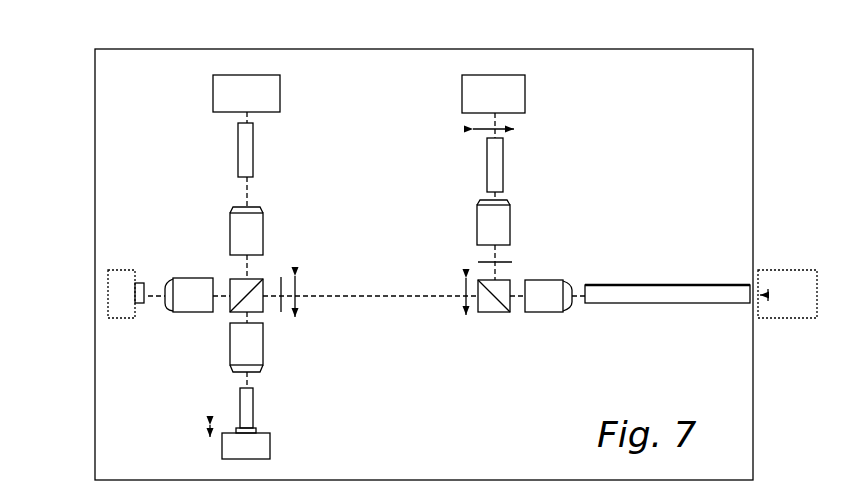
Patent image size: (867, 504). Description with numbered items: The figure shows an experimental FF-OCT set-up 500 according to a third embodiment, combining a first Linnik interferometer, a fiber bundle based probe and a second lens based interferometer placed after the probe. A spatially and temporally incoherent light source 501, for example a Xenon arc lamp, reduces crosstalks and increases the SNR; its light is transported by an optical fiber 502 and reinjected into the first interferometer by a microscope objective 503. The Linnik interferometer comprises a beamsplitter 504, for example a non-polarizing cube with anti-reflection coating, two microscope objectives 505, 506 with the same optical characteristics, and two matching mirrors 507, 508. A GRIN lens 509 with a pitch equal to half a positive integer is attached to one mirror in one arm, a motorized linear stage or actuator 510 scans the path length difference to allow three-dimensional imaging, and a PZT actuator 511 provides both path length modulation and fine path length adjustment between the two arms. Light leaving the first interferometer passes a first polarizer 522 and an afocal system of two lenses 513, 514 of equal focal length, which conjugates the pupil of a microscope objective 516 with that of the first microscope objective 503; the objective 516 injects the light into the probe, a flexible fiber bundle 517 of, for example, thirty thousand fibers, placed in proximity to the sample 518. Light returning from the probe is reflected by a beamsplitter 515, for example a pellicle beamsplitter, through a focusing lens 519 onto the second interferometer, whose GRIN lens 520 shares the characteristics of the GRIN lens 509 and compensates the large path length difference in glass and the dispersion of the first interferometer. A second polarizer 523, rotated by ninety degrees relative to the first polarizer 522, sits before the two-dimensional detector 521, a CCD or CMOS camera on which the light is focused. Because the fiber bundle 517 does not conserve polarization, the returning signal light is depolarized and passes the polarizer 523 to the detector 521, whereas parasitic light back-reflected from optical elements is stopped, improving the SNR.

The FF-OCT set-up 500 is at (155, 6).
The light source 501 is at (266, 112).
The optical fiber 502 is at (238, 133).
The microscope objective 503 is at (230, 222).
The beamsplitter 504 is at (230, 290).
The microscope objective 505 is at (230, 343).
The microscope objective 506 is at (166, 284).
The mirror 507 is at (257, 430).
The mirror 508 is at (142, 305).
The GRIN lens 509 is at (255, 397).
The motorized linear stage or actuator 510 is at (118, 318).
The PZT actuator 511 is at (270, 447).
The lens 513 is at (297, 322).
The lens 514 is at (464, 318).
The beamsplitter 515 is at (497, 312).
The microscope objective 516 is at (543, 312).
The fiber bundle 517 is at (690, 305).
The sample 518 is at (805, 305).
The focusing lens 519 is at (500, 230).
The GRIN lens 520 is at (487, 165).
The 2D detector 521 is at (515, 130).
The first polarizer 522 is at (282, 277).
The second polarizer 523 is at (512, 262).